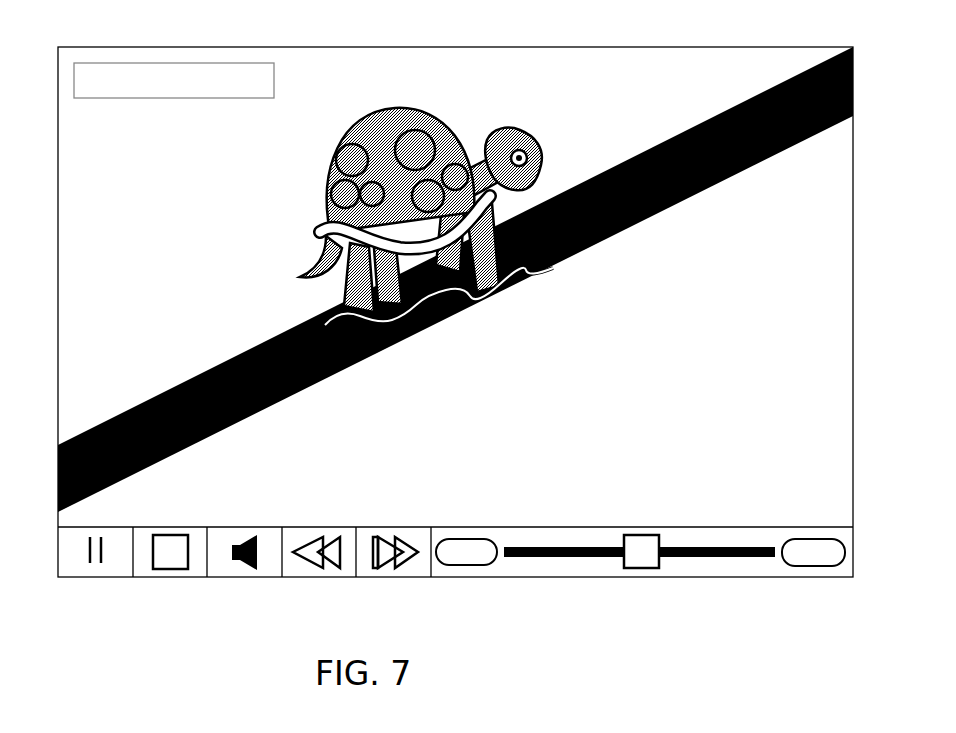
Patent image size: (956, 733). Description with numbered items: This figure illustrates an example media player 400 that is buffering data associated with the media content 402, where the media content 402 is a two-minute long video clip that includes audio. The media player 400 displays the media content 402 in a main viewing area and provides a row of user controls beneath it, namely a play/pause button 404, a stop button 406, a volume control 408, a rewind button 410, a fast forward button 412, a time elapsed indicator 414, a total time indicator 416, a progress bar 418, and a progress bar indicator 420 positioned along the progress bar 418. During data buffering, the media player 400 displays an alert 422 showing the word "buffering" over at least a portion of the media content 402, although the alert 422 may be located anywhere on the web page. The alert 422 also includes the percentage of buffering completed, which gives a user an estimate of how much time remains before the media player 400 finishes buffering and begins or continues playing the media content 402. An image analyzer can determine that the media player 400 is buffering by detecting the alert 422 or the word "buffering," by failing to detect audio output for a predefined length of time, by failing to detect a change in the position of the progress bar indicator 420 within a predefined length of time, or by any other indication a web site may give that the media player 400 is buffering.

The media player 400 is at (102, 24).
The media content 402 is at (150, 155).
The play/pause button 404 is at (95, 578).
The stop button 406 is at (168, 578).
The volume control 408 is at (243, 578).
The rewind button 410 is at (317, 578).
The fast forward button 412 is at (392, 578).
The time elapsed indicator 414 is at (472, 567).
The total time indicator 416 is at (818, 569).
The progress bar 418 is at (517, 557).
The progress bar indicator 420 is at (648, 569).
The alert 422 is at (182, 85).